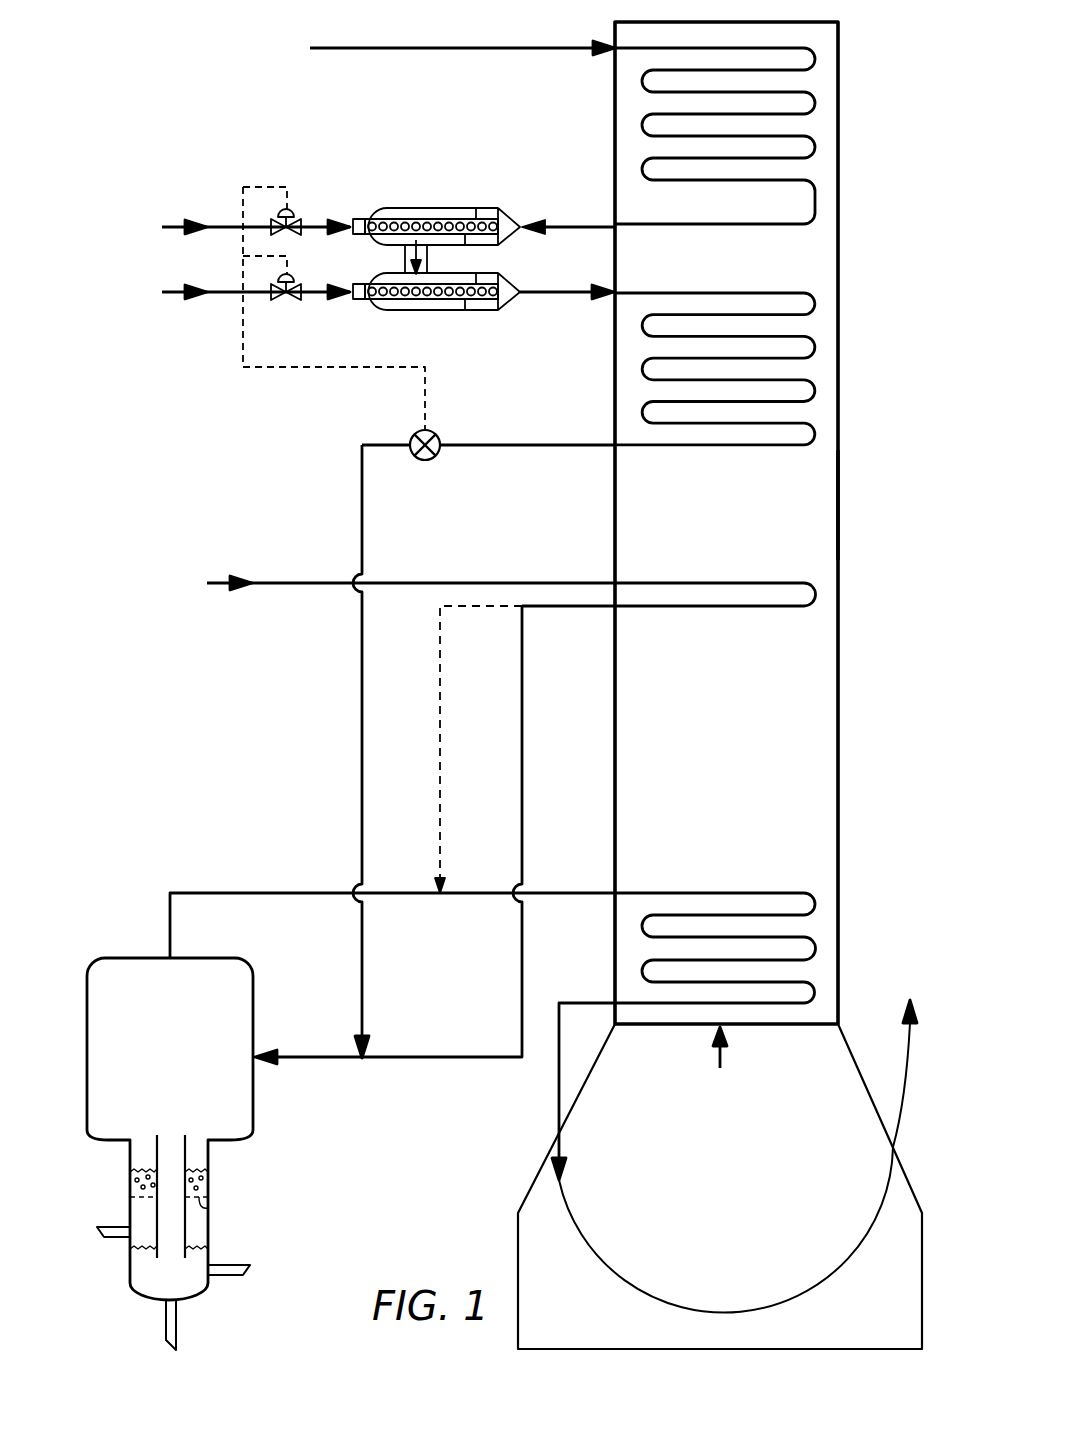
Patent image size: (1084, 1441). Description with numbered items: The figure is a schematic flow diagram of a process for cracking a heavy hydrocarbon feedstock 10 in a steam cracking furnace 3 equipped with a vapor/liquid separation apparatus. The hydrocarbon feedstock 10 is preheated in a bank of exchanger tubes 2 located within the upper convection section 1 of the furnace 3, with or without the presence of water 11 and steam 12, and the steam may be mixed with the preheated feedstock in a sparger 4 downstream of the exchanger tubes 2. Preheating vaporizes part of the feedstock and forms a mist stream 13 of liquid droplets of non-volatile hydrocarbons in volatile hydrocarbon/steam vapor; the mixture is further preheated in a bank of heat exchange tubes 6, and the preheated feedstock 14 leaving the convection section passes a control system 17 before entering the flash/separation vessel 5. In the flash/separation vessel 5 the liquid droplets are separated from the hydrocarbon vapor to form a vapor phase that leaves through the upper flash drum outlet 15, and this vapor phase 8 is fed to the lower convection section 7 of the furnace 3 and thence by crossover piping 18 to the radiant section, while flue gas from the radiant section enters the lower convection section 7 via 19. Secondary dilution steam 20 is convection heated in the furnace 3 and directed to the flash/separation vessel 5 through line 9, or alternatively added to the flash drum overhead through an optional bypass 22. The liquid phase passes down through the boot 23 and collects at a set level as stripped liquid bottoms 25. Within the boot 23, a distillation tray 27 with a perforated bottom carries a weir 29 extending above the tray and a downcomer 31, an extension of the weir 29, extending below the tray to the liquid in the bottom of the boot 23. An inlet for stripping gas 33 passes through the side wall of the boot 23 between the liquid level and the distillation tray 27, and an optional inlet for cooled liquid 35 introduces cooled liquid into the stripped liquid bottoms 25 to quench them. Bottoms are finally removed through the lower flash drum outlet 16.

The upper convection section 1 is at (830, 168).
The bank of exchanger tubes 2 is at (817, 102).
The steam cracking furnace 3 is at (838, 495).
The sparger 4 is at (373, 206).
The flash/separation vessel 5 is at (179, 1096).
The bank of heat exchange tubes 6 is at (815, 322).
The lower convection section 7 is at (813, 923).
The vapor phase 8 is at (565, 892).
The line 9 is at (322, 1054).
The hydrocarbon feedstock 10 is at (360, 46).
The water 11 is at (175, 226).
The steam 12 is at (222, 291).
The mist stream 13 is at (537, 292).
The preheated feedstock 14 is at (483, 444).
The upper flash drum outlet 15 is at (196, 890).
The lower flash drum outlet 16 is at (165, 1338).
The control system 17 is at (413, 435).
The crossover piping 18 is at (559, 1068).
The flue gas inlet 19 is at (723, 1058).
The secondary dilution steam 20 is at (221, 582).
The bypass 22 is at (440, 642).
The boot 23 is at (210, 1154).
The stripped liquid bottoms 25 is at (192, 1282).
The distillation tray 27 is at (207, 1210).
The weir 29 is at (152, 1192).
The downcomer 31 is at (186, 1226).
The inlet for stripping gas 33 is at (103, 1236).
The inlet for cooled liquid 35 is at (237, 1256).